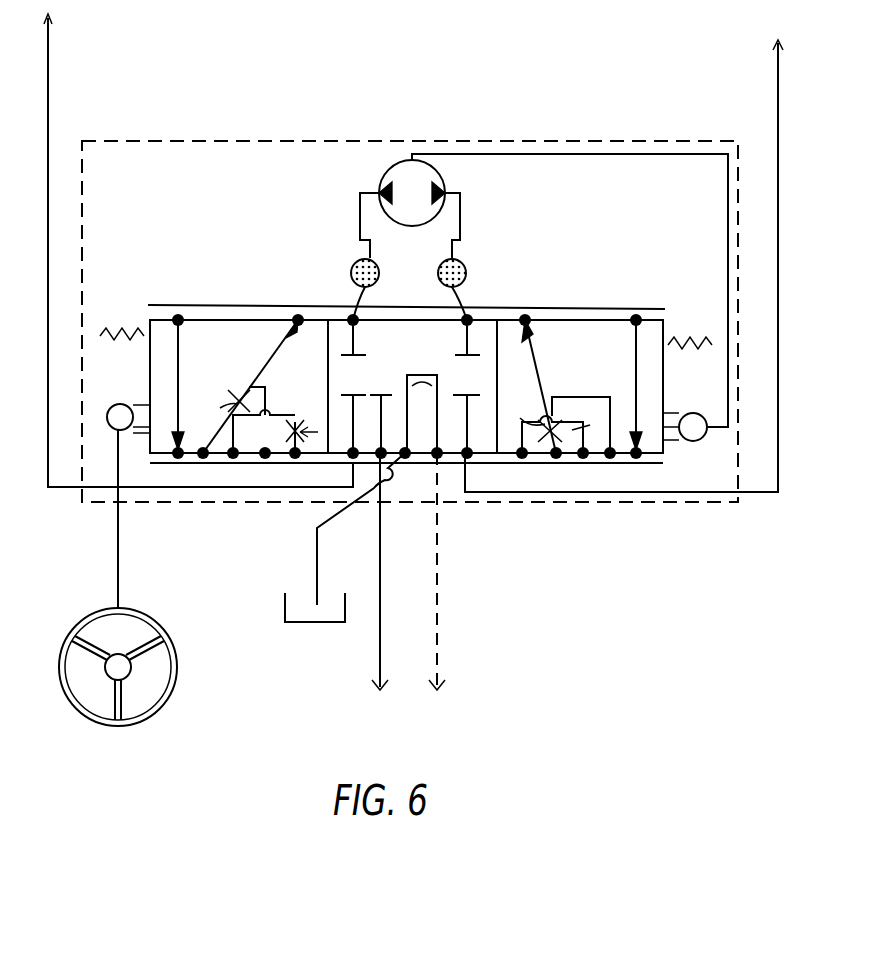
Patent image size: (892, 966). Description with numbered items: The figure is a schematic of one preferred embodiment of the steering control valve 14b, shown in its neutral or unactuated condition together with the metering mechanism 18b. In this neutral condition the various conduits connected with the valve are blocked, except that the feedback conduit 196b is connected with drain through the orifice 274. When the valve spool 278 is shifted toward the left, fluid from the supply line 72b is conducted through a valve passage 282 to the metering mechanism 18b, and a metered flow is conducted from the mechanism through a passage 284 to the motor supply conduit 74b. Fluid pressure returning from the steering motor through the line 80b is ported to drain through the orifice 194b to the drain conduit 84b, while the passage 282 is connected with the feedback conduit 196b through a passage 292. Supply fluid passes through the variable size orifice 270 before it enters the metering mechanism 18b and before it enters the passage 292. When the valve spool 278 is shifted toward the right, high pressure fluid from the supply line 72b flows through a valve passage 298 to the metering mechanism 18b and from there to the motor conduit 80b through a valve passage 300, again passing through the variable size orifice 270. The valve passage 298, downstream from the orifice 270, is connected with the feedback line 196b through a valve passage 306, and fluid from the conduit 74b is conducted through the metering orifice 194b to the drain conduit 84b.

The steering control valve 14b is at (589, 140).
The metering mechanism 18b is at (492, 232).
The motor supply conduit 74b is at (778, 82).
The motor conduit 80b is at (48, 85).
The drain conduit 84b is at (317, 528).
The supply line 72b is at (380, 672).
The metering orifice 194b is at (293, 444).
The feedback conduit 196b is at (437, 603).
The variable size orifice 270 is at (238, 404).
The orifice 274 is at (438, 352).
The valve spool 278 is at (700, 275).
The valve passage 282 is at (537, 378).
The passage 284 is at (636, 388).
The passage 292 is at (603, 400).
The valve passage 298 is at (292, 322).
The valve passage 300 is at (178, 375).
The valve passage 306 is at (300, 392).